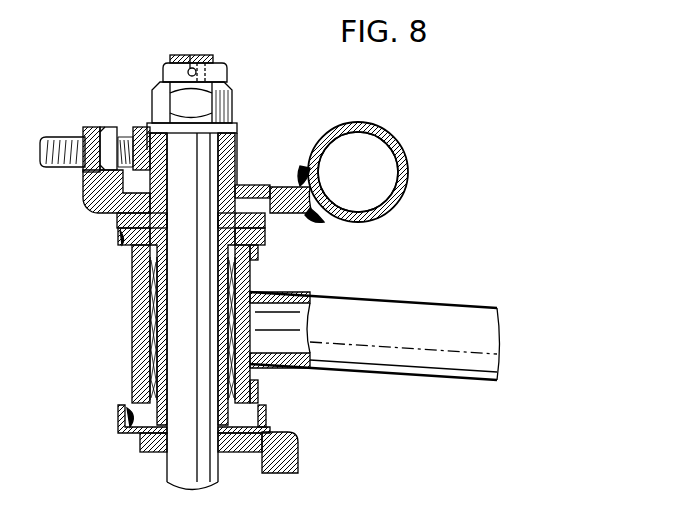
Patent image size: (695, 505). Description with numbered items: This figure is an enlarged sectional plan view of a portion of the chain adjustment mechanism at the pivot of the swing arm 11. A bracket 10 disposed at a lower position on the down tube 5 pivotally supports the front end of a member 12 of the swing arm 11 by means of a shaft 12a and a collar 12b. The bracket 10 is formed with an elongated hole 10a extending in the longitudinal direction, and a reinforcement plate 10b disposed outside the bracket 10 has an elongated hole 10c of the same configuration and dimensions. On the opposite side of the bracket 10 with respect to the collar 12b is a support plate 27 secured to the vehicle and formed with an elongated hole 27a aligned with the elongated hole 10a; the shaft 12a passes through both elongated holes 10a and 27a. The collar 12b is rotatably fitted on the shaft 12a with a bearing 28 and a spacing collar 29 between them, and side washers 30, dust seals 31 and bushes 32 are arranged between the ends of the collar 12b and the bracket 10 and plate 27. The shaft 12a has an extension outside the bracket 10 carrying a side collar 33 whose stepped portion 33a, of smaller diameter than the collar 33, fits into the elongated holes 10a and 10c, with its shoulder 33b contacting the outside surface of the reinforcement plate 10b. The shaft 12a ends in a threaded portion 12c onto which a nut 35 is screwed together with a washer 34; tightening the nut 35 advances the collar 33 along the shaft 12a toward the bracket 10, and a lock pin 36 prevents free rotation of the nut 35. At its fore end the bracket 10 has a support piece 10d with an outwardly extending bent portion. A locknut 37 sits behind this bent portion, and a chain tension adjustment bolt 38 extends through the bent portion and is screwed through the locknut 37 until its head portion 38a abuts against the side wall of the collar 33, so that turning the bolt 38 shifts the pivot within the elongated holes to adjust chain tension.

The down tube 5 is at (408, 166).
The bracket 10 is at (290, 214).
The elongated hole 10a is at (265, 188).
The reinforcement plate 10b is at (317, 166).
The elongated hole 10c is at (313, 170).
The support piece 10d is at (93, 127).
The swing arm 11 is at (406, 295).
The member 12 is at (433, 365).
The shaft 12a is at (177, 470).
The collar 12b is at (131, 323).
The threaded portion 12c is at (190, 62).
The support plate 27 is at (298, 452).
The elongated hole 27a is at (253, 452).
The bearing 28 is at (150, 284).
The spacing collar 29 is at (150, 371).
The side washer 30 is at (117, 221).
The dust seal 31 is at (118, 247).
The bush 32 is at (253, 258).
The side collar 33 is at (243, 180).
The stepped portion 33a is at (120, 237).
The shoulder 33b is at (262, 185).
The washer 34 is at (225, 128).
The nut 35 is at (203, 98).
The lock pin 36 is at (193, 68).
The locknut 37 is at (83, 173).
The chain tension adjustment bolt 38 is at (62, 138).
The head portion 38a is at (140, 127).